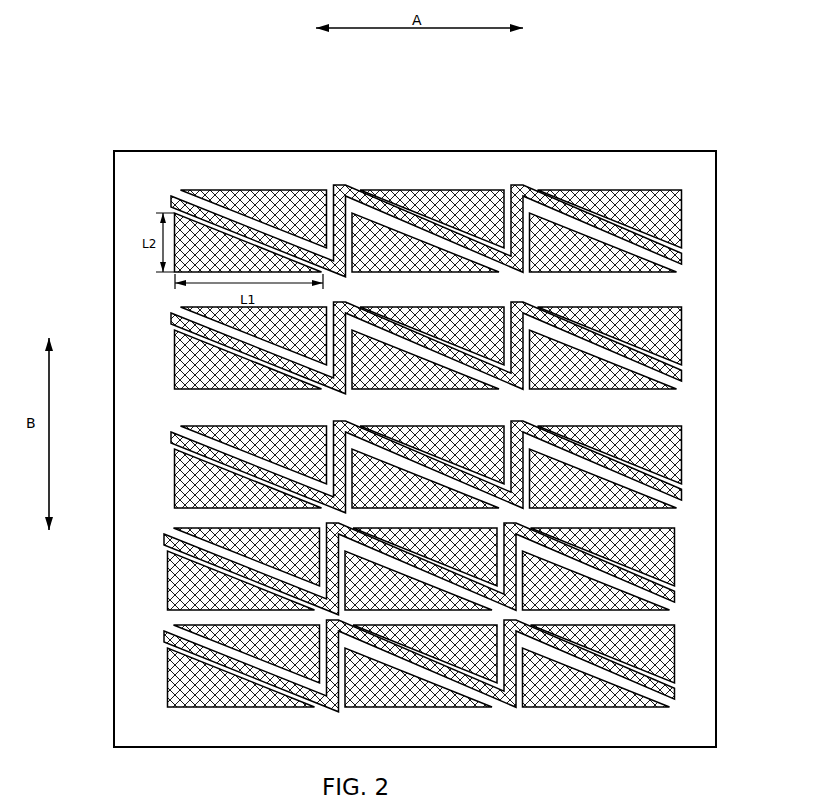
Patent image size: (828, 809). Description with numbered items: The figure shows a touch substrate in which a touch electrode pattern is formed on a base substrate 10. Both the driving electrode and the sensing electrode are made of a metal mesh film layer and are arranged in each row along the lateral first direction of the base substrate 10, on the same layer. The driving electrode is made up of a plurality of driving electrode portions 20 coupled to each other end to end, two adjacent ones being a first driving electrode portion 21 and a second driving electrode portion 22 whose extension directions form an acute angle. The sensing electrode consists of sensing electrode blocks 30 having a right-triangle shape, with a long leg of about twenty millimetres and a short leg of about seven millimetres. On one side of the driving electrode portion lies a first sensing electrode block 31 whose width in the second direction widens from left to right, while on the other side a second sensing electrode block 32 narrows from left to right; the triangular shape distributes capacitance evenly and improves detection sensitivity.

The base substrate 10 is at (652, 183).
The driving electrode portion 20 is at (428, 231).
The first driving electrode portion 21 is at (330, 232).
The second driving electrode portion 22 is at (200, 210).
The sensing electrode block 30 is at (426, 467).
The first sensing electrode block 31 is at (433, 215).
The second sensing electrode block 32 is at (387, 268).